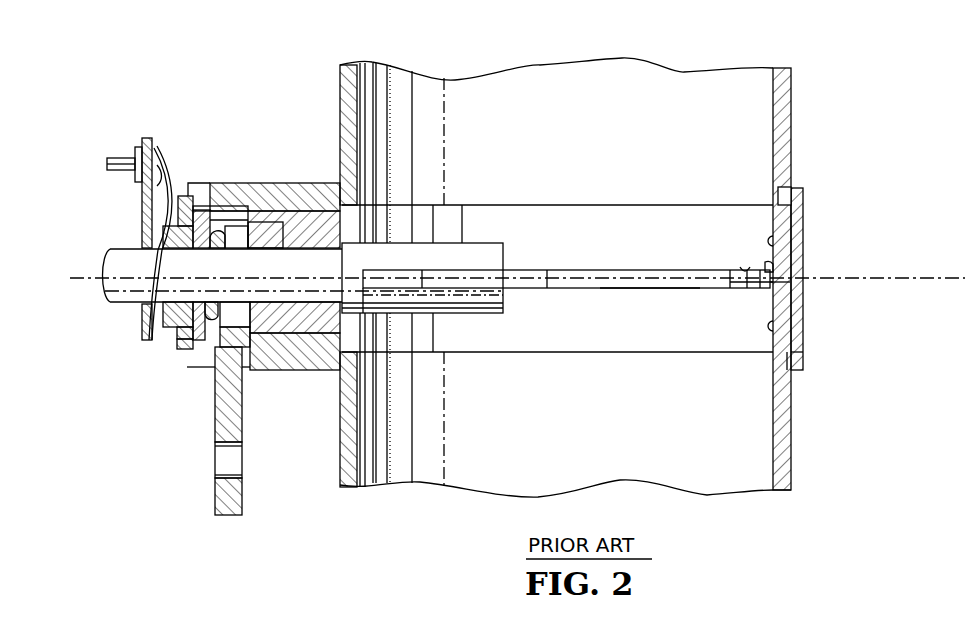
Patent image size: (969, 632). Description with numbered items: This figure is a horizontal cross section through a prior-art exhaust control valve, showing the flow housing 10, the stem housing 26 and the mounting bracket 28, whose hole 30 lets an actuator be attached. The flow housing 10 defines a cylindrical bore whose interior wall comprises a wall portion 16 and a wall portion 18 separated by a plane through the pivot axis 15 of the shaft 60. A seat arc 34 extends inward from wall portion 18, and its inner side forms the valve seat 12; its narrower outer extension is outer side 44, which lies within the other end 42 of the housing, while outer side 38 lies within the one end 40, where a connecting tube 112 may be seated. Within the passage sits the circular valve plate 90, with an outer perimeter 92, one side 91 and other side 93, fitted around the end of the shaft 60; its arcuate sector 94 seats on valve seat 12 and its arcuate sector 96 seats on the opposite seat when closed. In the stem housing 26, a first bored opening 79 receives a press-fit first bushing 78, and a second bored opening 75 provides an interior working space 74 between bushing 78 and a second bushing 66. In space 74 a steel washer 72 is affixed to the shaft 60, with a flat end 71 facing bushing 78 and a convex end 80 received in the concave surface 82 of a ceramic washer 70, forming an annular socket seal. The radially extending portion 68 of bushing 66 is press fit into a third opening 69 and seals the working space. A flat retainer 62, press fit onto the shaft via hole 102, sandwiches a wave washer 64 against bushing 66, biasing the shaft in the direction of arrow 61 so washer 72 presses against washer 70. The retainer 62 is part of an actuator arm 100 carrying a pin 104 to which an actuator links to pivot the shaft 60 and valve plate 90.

The flow housing 10 is at (804, 201).
The valve seat 12 is at (753, 272).
The pivot axis 15 is at (547, 283).
The wall portion 16 is at (772, 326).
The wall portion 18 is at (772, 241).
The stem housing 26 is at (278, 181).
The mounting bracket 28 is at (213, 496).
The hole 30 is at (215, 472).
The seat arc 34 is at (632, 217).
The outer side 38 is at (787, 357).
The end of housing 40 is at (800, 352).
The other end of housing 42 is at (797, 188).
The outer side 44 is at (782, 200).
The shaft 60 is at (448, 248).
The arrow 61 is at (200, 258).
The flat retainer 62 is at (143, 338).
The wave washer 64 is at (149, 137).
The second bushing 66 is at (172, 224).
The radially extending portion 68 is at (182, 345).
The third opening 69 is at (182, 360).
The ceramic washer 70 is at (199, 212).
The flat end 71 is at (230, 330).
The steel washer 72 is at (217, 226).
The interior working space 74 is at (245, 220).
The second bored opening 75 is at (230, 205).
The first bushing 78 is at (312, 223).
The first bored opening 79 is at (288, 226).
The convex-shaped end 80 is at (222, 327).
The concave surface 82 is at (213, 322).
The valve plate 90 is at (543, 292).
The one side of plate 91 is at (422, 283).
The outer perimeter 92 is at (767, 287).
The other side of plate 93 is at (640, 289).
The arcuate sector 94 is at (767, 263).
The arcuate sector 96 is at (370, 290).
The actuator arm 100 is at (152, 155).
The hole 102 is at (140, 302).
The pin 104 is at (120, 170).
The connecting tube 112 is at (778, 483).